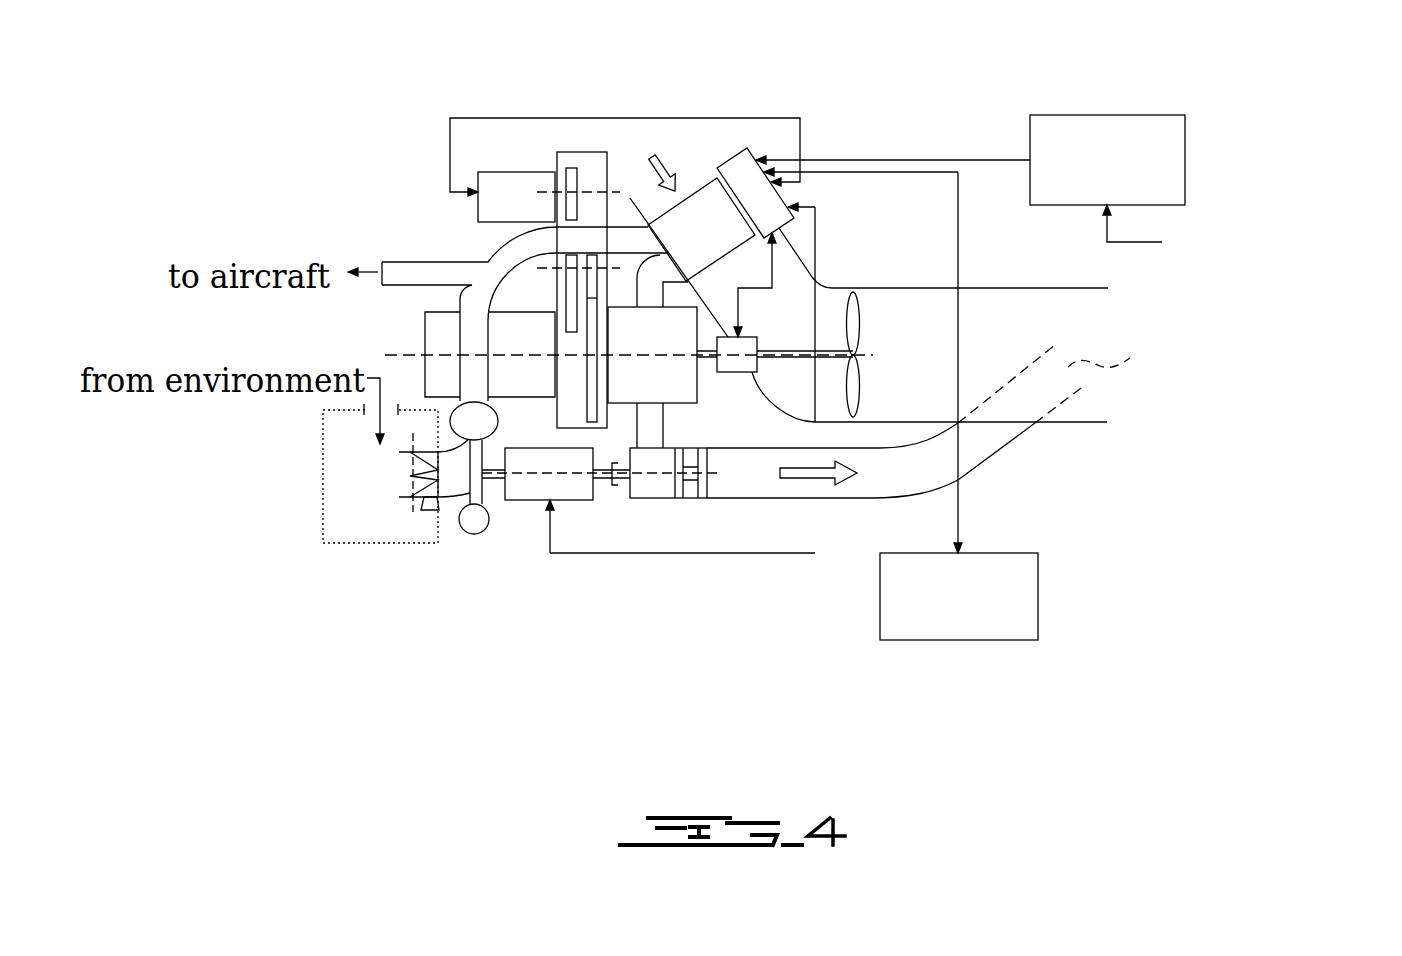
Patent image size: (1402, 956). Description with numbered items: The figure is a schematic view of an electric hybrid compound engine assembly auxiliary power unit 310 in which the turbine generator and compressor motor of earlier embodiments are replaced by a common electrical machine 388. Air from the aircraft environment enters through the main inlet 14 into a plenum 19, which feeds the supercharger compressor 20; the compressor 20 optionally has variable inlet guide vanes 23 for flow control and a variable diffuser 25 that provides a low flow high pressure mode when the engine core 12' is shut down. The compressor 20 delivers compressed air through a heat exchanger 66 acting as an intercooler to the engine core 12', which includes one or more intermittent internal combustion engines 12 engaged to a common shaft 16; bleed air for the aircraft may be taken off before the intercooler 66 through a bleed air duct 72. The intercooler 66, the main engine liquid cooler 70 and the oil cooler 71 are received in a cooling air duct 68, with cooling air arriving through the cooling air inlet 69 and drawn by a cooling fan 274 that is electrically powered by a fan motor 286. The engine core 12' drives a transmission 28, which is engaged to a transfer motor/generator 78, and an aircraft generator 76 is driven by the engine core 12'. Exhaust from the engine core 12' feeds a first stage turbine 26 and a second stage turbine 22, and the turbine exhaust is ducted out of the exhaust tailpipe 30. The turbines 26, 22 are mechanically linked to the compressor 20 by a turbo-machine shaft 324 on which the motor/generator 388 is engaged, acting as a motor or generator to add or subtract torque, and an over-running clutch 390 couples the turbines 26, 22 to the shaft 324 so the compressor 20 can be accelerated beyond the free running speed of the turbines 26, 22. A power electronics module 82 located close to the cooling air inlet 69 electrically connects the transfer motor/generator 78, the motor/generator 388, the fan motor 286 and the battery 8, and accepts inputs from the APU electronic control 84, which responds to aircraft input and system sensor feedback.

The electric hybrid compound engine assembly auxiliary power unit 310 is at (266, 123).
The transfer motor/generator 78 is at (503, 183).
The transmission 28 is at (597, 162).
The cooling air inlet 69 is at (652, 155).
The heat exchanger 66 is at (701, 160).
The main engine liquid cooler 70 is at (701, 160).
The oil cooler 71 is at (707, 205).
The power electronics module 82 is at (750, 162).
The cooling air duct 68 is at (785, 288).
The cooling fan 274 is at (857, 312).
The APU electronic control 84 is at (1112, 115).
The bleed air duct 72 is at (397, 268).
The aircraft generator 76 is at (427, 328).
The main inlet 14 is at (372, 412).
The plenum 19 is at (372, 513).
The variable inlet guide vanes 23 is at (407, 498).
The supercharger compressor 20 is at (462, 500).
The variable diffuser 25 is at (475, 512).
The common electrical machine 388 is at (532, 490).
The turbo-machine shaft 324 is at (603, 485).
The over-running clutch 390 is at (615, 485).
The common shaft 16 is at (632, 357).
The first stage turbine 26 is at (678, 498).
The second stage turbine 22 is at (707, 498).
The intermittent internal combustion engine 12 is at (896, 490).
The engine core 12' is at (896, 490).
The fan motor 286 is at (733, 372).
The exhaust tailpipe 30 is at (1116, 349).
The battery 8 is at (1038, 592).